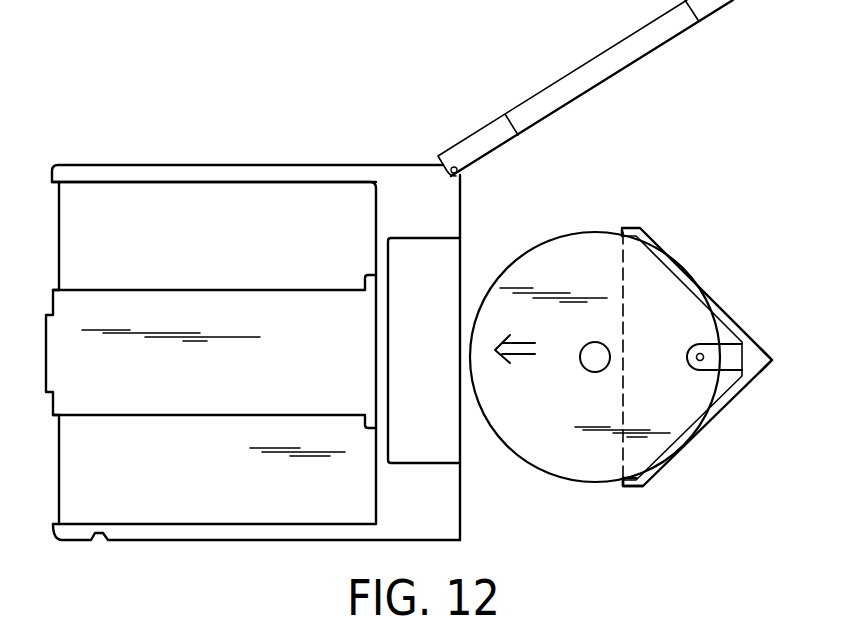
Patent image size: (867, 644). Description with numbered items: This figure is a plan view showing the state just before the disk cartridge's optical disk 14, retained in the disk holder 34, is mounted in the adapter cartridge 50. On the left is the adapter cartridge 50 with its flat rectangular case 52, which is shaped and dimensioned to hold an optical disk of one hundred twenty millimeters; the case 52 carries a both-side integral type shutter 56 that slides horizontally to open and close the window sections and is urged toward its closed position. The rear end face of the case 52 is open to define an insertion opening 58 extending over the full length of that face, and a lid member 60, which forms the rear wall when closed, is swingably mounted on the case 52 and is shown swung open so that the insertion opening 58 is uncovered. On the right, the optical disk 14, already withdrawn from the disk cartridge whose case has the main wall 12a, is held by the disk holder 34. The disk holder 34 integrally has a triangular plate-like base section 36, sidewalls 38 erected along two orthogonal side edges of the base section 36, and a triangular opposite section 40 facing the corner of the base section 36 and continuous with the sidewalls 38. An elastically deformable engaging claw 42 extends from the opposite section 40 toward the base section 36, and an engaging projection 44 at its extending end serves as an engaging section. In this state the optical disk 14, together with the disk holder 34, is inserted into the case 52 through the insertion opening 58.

The main wall 12a is at (335, 196).
The optical disk 14 is at (543, 270).
The disk holder 34 is at (680, 255).
The base section 36 is at (625, 488).
The sidewalls 38 is at (710, 297).
The opposite section 40 is at (762, 368).
The engaging claw 42 is at (717, 371).
The engaging projection 44 is at (697, 359).
The adapter cartridge 50 is at (258, 140).
The case 52 is at (170, 161).
The shutter 56 is at (165, 312).
The insertion opening 58 is at (462, 500).
The lid member 60 is at (615, 62).